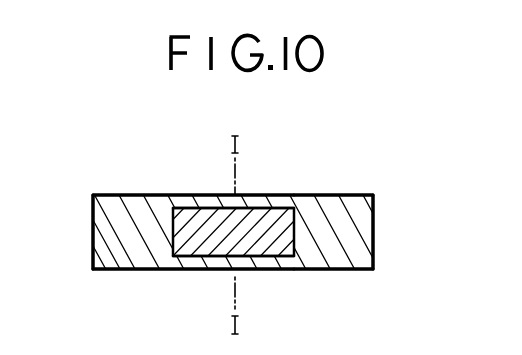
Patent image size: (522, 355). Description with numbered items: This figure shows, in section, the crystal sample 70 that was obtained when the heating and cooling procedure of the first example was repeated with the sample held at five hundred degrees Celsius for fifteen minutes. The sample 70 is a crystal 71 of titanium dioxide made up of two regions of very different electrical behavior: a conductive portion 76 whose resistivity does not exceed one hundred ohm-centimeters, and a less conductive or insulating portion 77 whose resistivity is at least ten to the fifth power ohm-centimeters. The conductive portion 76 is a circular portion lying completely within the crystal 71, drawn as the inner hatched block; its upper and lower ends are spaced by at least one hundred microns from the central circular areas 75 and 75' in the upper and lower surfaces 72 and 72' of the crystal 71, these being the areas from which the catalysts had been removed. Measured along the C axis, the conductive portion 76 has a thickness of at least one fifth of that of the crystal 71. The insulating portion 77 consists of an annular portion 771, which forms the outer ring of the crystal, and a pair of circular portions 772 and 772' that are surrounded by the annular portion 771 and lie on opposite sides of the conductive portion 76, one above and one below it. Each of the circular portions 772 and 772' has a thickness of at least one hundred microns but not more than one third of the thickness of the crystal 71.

The crystal sample 70 is at (93, 252).
The crystal 71 is at (416, 185).
The upper surface 72 is at (333, 173).
The lower surface 72' is at (333, 291).
The central circular area 75 is at (233, 182).
The central circular area 75' is at (233, 293).
The conductive portion 76 is at (262, 222).
The insulating portion 77 is at (338, 254).
The annular portion 771 is at (110, 222).
The circular portion 772 is at (193, 179).
The circular portion 772' is at (193, 289).